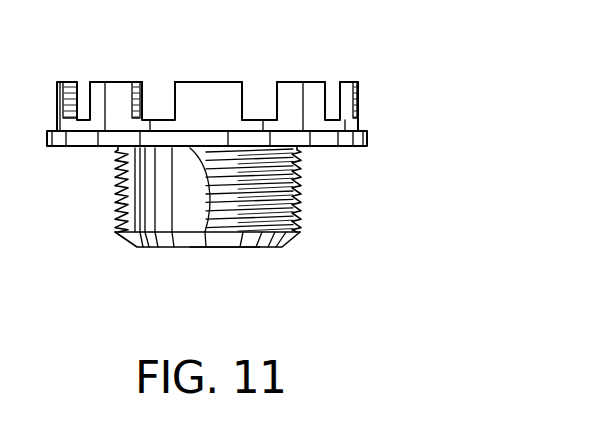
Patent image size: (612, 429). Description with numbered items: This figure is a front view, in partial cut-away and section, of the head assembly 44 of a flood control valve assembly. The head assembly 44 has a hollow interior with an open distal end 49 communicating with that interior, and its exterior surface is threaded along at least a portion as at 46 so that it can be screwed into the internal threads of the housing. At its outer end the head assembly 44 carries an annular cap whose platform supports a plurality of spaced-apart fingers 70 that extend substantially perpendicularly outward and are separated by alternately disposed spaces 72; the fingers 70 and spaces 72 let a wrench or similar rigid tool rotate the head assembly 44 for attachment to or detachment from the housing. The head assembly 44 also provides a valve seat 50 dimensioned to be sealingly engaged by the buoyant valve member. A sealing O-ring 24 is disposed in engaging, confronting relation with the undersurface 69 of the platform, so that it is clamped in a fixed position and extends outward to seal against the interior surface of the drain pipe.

The O-ring 24 is at (370, 138).
The head assembly 44 is at (376, 88).
The threaded exterior surface 46 is at (298, 205).
The open distal end 49 is at (184, 252).
The valve seat 50 is at (244, 252).
The undersurface of the platform 69 is at (358, 128).
The fingers 70 is at (97, 82).
The spaces 72 is at (258, 87).